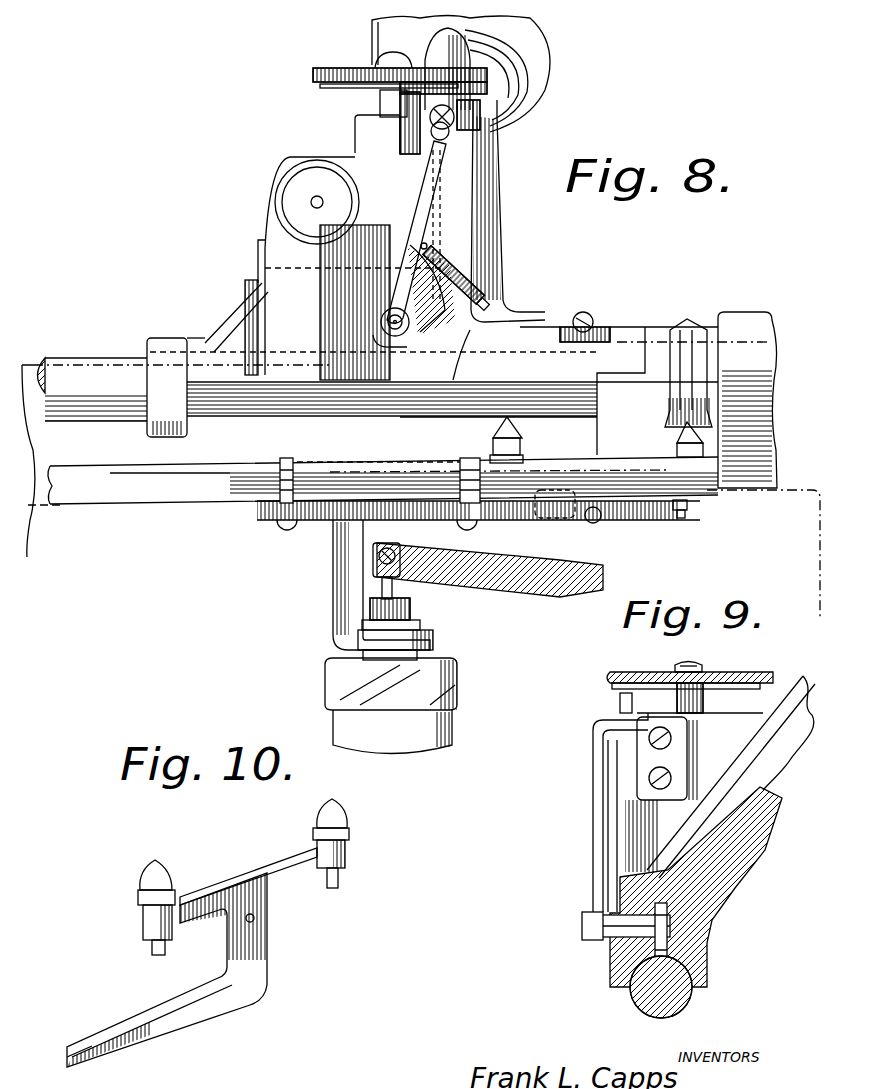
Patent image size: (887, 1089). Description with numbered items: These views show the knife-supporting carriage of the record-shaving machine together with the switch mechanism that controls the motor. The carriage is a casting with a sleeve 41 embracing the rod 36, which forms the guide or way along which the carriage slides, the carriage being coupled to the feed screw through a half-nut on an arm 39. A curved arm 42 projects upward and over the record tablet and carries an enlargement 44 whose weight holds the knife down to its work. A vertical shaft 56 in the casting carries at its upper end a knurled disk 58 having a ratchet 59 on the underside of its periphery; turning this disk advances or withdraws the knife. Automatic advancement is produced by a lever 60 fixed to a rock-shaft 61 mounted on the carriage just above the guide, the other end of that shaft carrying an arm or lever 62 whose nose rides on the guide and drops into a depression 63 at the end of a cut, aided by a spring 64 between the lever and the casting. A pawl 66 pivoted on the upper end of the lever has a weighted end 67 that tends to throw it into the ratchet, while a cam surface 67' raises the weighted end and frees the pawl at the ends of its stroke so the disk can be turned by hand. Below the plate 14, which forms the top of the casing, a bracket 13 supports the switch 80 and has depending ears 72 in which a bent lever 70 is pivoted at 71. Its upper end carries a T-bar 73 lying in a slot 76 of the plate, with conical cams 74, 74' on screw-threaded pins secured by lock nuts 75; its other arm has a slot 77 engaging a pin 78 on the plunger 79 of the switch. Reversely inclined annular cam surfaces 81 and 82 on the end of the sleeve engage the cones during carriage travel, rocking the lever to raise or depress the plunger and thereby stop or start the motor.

In FIG. 8, the bracket 13 is at (340, 540).
In FIG. 8, the plate 14 is at (182, 497).
In FIG. 8, the rod 36 is at (72, 362).
In FIG. 9, the rod 36 is at (690, 998).
In FIG. 8, the arm 39 is at (598, 326).
In FIG. 8, the sleeve 41 is at (172, 342).
In FIG. 8, the curved arm 42 is at (498, 215).
In FIG. 8, the enlargement 44 is at (527, 64).
In FIG. 8, the vertical shaft 56 is at (378, 101).
In FIG. 8, the disk 58 is at (400, 67).
In FIG. 9, the disk 58 is at (618, 674).
In FIG. 8, the ratchet 59 is at (380, 90).
In FIG. 9, the ratchet 59 is at (618, 689).
In FIG. 8, the lever 60 is at (413, 197).
In FIG. 9, the lever 60 is at (592, 847).
In FIG. 8, the rock-shaft 61 is at (386, 322).
In FIG. 9, the rock-shaft 61 is at (634, 845).
In FIG. 8, the arm or lever 62 is at (480, 318).
In FIG. 9, the arm or lever 62 is at (707, 948).
In FIG. 8, the depression 63 is at (465, 385).
In FIG. 9, the depression 63 is at (650, 962).
In FIG. 8, the spring 64 is at (473, 276).
In FIG. 8, the pawl 66 is at (413, 103).
In FIG. 9, the pawl 66 is at (623, 700).
In FIG. 9, the weighted end 67 is at (652, 771).
In FIG. 8, the cam surface 67' is at (488, 128).
In FIG. 8, the bent lever 70 is at (607, 568).
In FIG. 10, the bent lever 70 is at (263, 968).
In FIG. 8, the pivot 71 is at (601, 516).
In FIG. 8, the ears 72 is at (573, 512).
In FIG. 8, the T-bar 73 is at (560, 470).
In FIG. 10, the T-bar 73 is at (273, 873).
In FIG. 8, the conical cam surface 74 is at (666, 439).
In FIG. 10, the conical cam surface 74 is at (347, 812).
In FIG. 8, the conical cam surface 74' is at (401, 460).
In FIG. 10, the conical cam surface 74' is at (136, 866).
In FIG. 10, the lock nuts 75 is at (348, 838).
In FIG. 8, the slot 76 is at (703, 495).
In FIG. 10, the slot 77 is at (97, 1027).
In FIG. 8, the pin 78 is at (375, 557).
In FIG. 8, the plunger 79 is at (405, 600).
In FIG. 8, the switch 80 is at (457, 668).
In FIG. 8, the cam surface 81 is at (695, 327).
In FIG. 8, the cam surface 82 is at (681, 320).